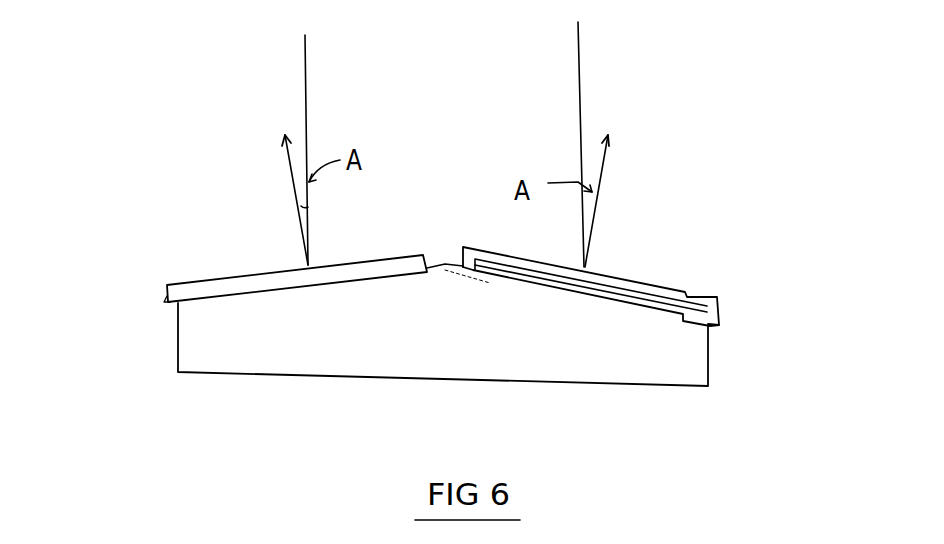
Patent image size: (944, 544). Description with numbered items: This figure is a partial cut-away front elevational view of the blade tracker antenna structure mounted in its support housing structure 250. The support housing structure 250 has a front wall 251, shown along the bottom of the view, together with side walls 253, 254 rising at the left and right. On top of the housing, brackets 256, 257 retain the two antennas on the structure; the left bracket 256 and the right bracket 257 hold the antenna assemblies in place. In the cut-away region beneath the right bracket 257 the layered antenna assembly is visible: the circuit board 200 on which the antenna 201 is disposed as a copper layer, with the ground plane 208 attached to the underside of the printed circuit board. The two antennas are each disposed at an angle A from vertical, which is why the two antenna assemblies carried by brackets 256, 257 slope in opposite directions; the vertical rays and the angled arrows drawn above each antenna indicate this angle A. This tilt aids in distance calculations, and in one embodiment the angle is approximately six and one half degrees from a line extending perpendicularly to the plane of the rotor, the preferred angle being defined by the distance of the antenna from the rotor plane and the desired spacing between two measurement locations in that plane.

The support housing structure 250 is at (195, 343).
The front wall 251 is at (325, 360).
The side wall 253 is at (177, 325).
The side wall 254 is at (708, 376).
The bracket 256 is at (176, 293).
The bracket 257 is at (716, 298).
The circuit board 200 is at (567, 280).
The ground plane 208 is at (612, 295).
The antenna (copper layer) 201 is at (610, 282).